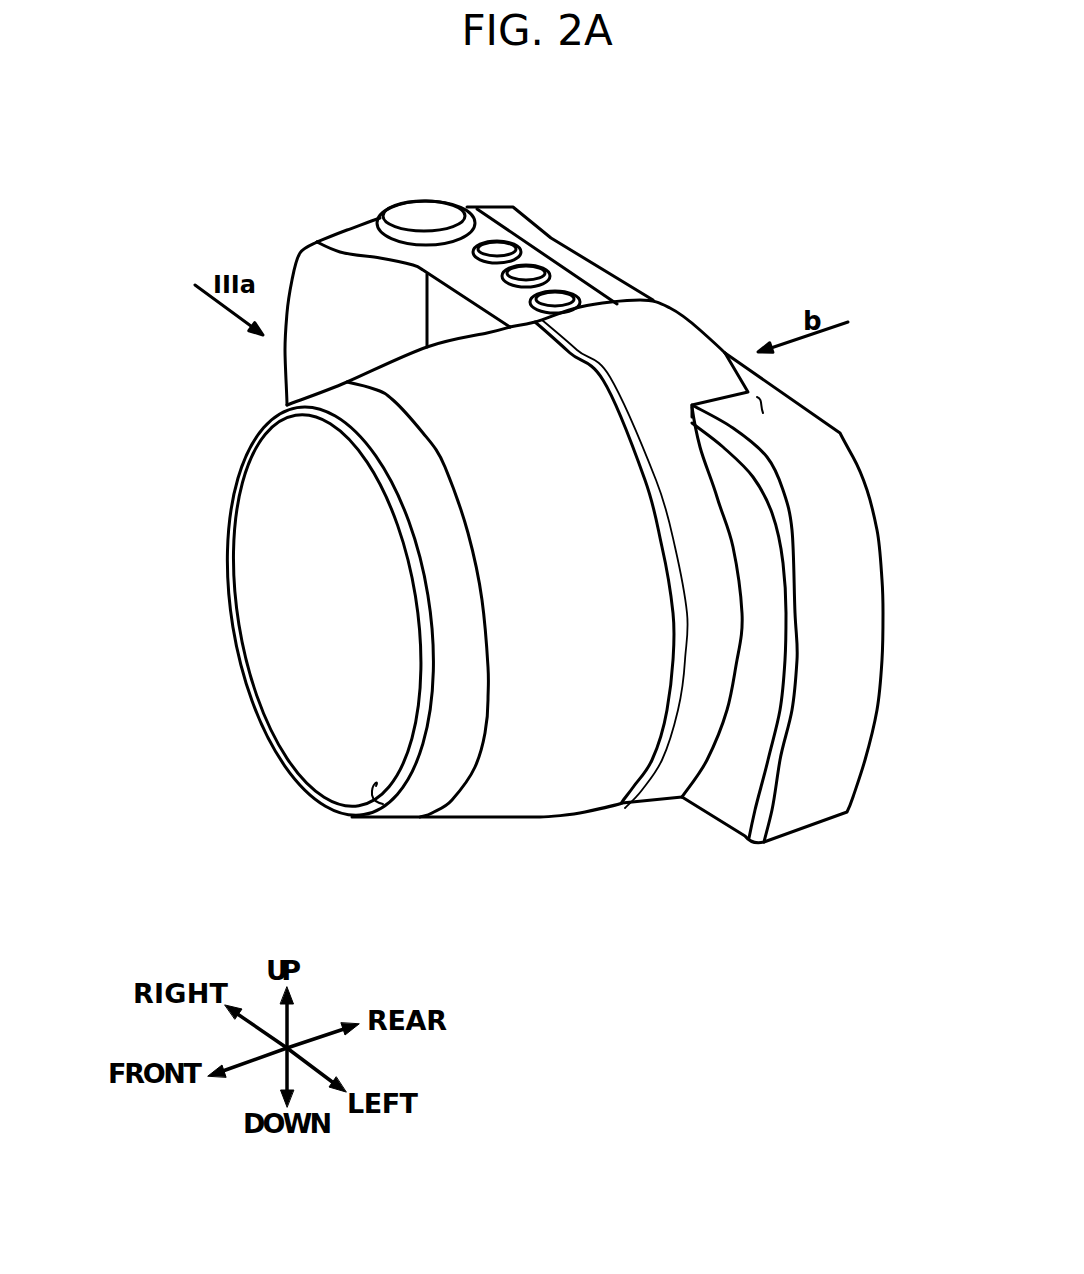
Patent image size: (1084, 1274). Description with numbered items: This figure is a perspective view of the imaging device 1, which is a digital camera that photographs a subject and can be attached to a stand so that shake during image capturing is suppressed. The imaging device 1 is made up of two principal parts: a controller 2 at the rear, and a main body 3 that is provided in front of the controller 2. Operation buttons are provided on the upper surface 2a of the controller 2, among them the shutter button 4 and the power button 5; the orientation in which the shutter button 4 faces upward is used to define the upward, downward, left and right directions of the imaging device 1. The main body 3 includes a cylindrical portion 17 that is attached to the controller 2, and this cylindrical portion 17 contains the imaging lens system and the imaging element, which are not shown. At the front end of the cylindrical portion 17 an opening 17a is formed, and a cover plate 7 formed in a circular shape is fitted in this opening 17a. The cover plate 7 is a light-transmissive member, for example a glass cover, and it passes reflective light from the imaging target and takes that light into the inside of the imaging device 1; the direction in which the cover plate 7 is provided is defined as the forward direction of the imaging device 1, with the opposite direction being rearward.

The imaging device 1 is at (766, 228).
The controller 2 is at (842, 430).
The upper surface 2a is at (770, 402).
The main body 3 is at (544, 823).
The shutter button 4 is at (452, 202).
The power button 5 is at (575, 292).
The cover plate 7 is at (277, 512).
The cylindrical portion 17 is at (473, 819).
The opening 17a is at (380, 805).